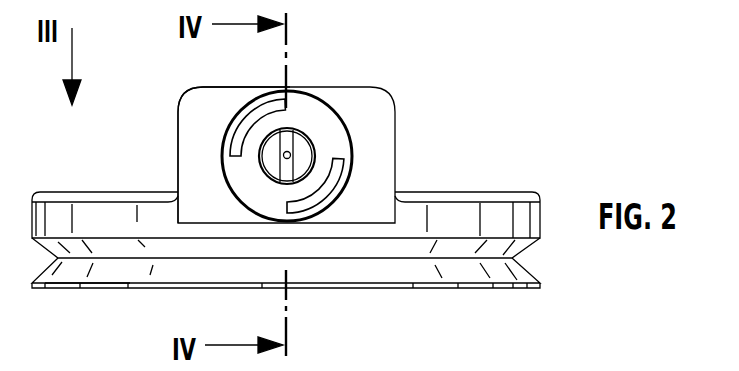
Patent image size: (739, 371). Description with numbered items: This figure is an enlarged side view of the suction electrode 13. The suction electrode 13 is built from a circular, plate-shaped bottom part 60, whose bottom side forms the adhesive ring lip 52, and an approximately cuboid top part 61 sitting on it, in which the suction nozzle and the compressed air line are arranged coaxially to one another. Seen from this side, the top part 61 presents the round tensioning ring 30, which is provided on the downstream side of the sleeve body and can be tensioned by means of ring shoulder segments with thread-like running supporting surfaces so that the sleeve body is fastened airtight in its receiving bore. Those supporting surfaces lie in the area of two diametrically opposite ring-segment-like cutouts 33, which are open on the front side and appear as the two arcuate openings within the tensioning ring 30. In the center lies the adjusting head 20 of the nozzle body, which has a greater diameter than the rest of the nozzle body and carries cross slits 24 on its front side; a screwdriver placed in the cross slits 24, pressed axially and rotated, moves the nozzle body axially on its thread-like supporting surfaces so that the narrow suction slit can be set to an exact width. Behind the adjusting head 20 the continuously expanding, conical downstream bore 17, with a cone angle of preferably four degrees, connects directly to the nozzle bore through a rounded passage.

The suction electrode 13 is at (428, 98).
The downstream bore 17 is at (270, 162).
The adjusting head 20 is at (313, 143).
The cross slits 24 is at (287, 154).
The tensioning ring 30 is at (303, 110).
The ring-segment-like cutouts 33 is at (263, 110).
The adhesive ring lip 52 is at (85, 284).
The bottom part 60 is at (490, 212).
The top part 61 is at (200, 115).